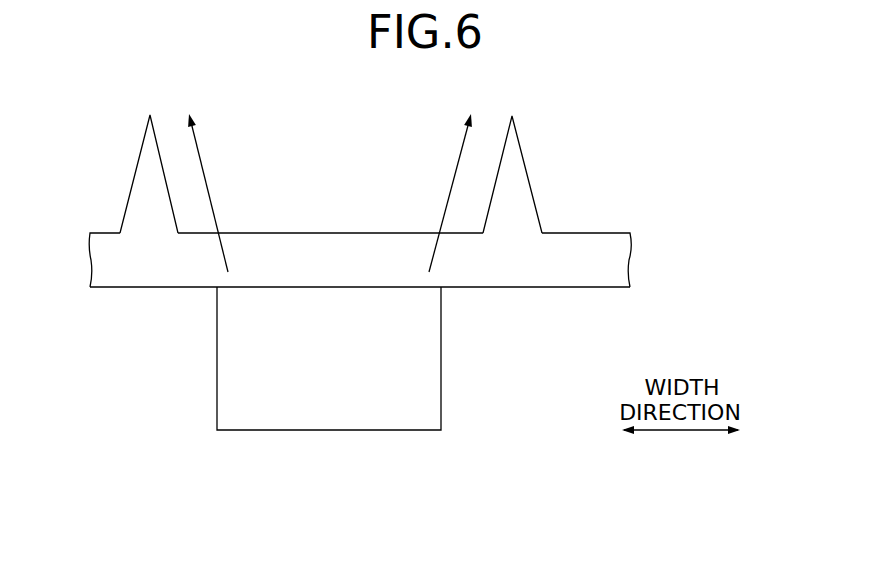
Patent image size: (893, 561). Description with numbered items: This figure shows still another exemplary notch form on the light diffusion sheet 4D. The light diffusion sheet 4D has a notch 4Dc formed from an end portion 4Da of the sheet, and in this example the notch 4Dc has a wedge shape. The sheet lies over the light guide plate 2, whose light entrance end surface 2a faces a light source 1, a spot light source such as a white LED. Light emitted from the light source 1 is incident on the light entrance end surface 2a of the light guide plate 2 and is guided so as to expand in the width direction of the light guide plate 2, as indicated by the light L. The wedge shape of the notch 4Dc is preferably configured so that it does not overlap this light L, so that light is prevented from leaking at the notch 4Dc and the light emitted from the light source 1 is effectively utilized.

The light source 1 is at (332, 430).
The light guide plate 2 is at (603, 260).
The light entrance end surface 2a is at (605, 288).
The light diffusion sheet 4D is at (195, 237).
The end portion 4Da is at (398, 237).
The notch 4Dc is at (130, 202).
The light beam L is at (201, 160).